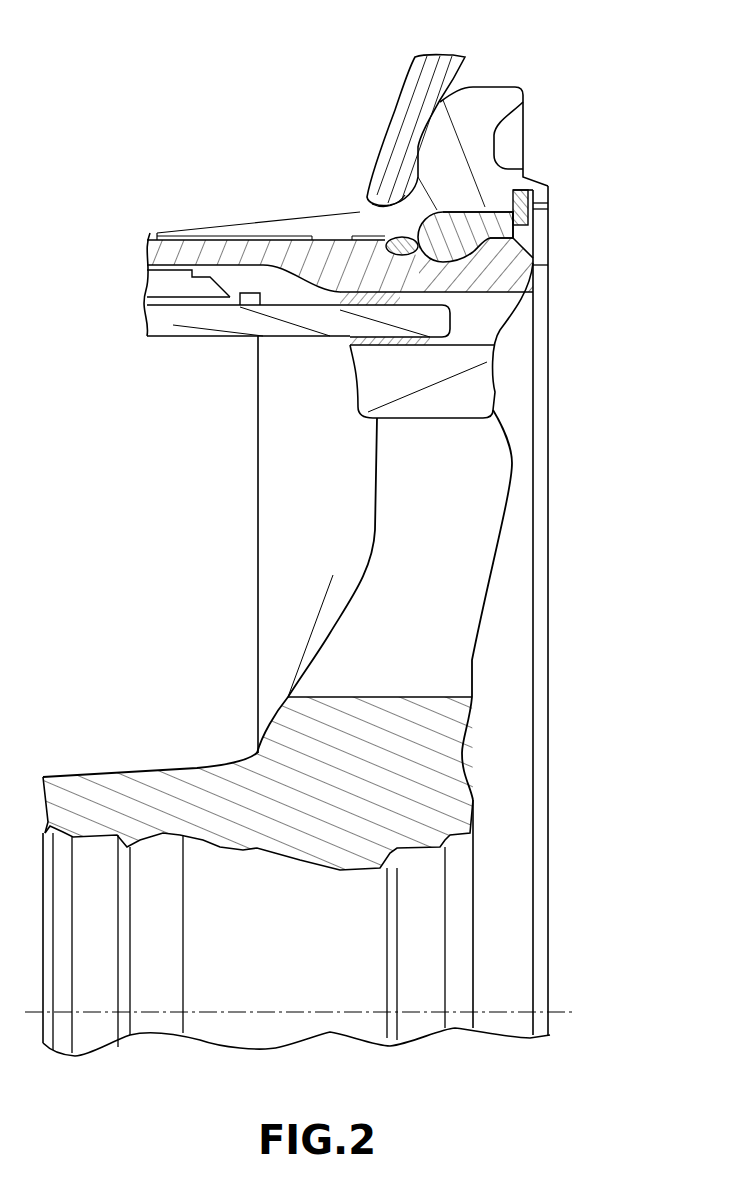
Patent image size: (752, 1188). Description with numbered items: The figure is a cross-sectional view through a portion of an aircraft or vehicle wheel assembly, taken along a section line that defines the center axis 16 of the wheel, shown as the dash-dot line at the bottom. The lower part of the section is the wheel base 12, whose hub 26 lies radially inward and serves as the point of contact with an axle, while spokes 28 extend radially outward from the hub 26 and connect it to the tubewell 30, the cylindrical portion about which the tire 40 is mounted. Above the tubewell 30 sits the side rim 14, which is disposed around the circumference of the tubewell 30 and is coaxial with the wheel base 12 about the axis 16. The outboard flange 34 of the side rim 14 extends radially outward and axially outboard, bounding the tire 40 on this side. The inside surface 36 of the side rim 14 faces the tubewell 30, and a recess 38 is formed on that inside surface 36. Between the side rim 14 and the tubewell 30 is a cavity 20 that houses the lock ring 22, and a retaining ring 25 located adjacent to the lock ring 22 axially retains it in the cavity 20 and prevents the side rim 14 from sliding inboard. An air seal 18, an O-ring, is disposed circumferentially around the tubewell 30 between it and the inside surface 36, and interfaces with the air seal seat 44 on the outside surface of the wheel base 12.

The wheel base 12 is at (548, 263).
The side rim 14 is at (400, 190).
The axis 16 is at (558, 1012).
The air seal 18 is at (398, 250).
The cavity 20 is at (477, 198).
The lock ring 22 is at (497, 225).
The retaining ring 25 is at (548, 213).
The hub 26 is at (460, 810).
The spokes 28 is at (472, 540).
The tubewell 30 is at (150, 237).
The outboard flange 34 is at (500, 86).
The inside surface 36 is at (368, 221).
The recess 38 is at (307, 222).
The tire 40 is at (420, 78).
The air seal seat 44 is at (418, 250).